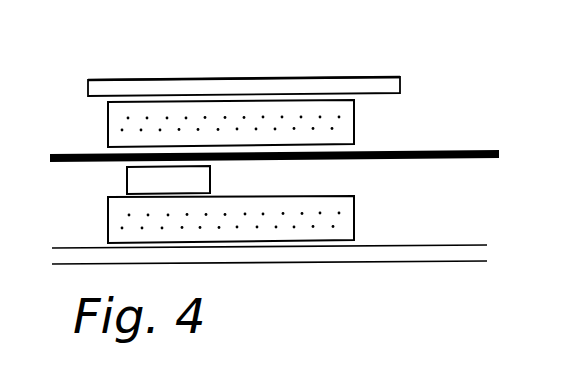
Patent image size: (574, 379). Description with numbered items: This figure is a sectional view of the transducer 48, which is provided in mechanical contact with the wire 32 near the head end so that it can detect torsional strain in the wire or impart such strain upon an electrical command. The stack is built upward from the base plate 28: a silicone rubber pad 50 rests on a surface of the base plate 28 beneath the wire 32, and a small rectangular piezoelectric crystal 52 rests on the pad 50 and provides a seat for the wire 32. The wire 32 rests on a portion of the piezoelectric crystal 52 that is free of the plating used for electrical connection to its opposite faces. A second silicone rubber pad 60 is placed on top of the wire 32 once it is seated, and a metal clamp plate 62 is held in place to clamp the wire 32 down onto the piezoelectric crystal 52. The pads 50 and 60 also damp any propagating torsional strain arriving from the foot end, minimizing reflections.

The base plate 28 is at (455, 245).
The wire 32 is at (70, 153).
The transducer 48 is at (327, 18).
The silicone rubber pad 50 is at (354, 218).
The piezoelectric crystal 52 is at (127, 186).
The second silicone rubber pad 60 is at (354, 124).
The metal clamp plate 62 is at (164, 80).